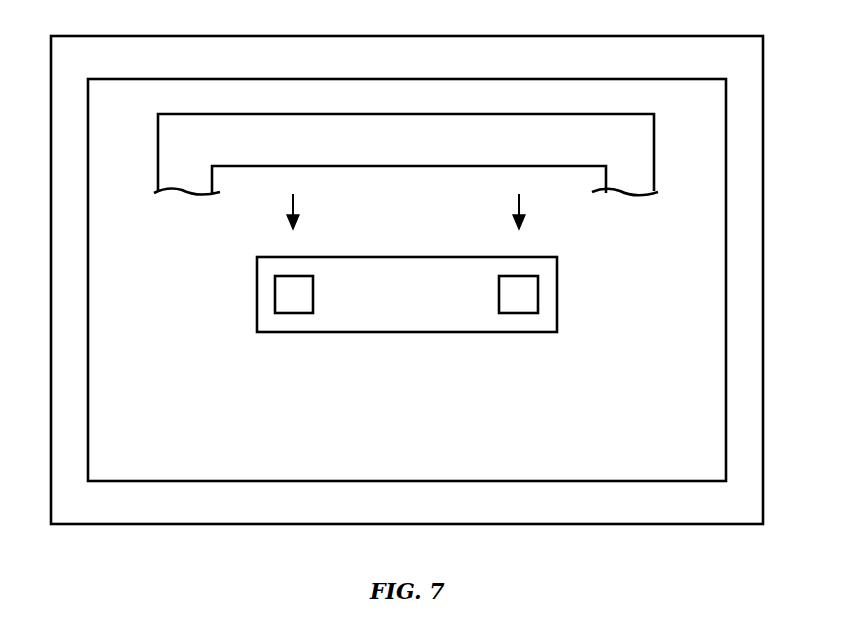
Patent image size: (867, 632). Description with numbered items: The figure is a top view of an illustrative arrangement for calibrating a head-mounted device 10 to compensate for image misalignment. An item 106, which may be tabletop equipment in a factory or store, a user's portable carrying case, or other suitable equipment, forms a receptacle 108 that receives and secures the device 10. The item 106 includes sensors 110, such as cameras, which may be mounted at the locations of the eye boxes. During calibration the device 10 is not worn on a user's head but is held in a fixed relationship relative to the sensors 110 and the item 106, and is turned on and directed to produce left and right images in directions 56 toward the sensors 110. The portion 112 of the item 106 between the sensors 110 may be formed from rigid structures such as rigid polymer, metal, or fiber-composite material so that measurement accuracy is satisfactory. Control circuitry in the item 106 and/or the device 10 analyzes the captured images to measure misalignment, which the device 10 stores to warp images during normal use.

The device 10 is at (655, 138).
The directions 56 is at (295, 200).
The item 106 is at (748, 251).
The receptacle 108 is at (712, 199).
The sensors 110 is at (296, 305).
The portion 112 is at (411, 322).